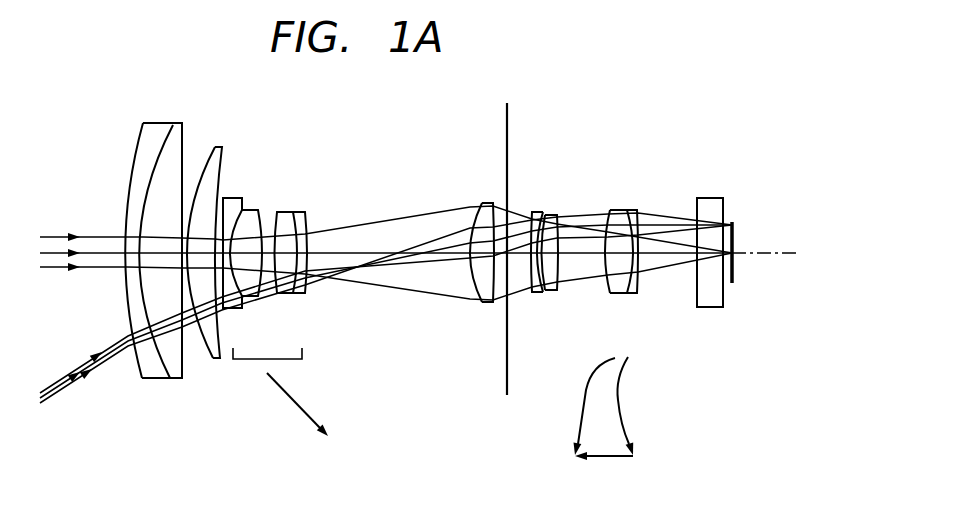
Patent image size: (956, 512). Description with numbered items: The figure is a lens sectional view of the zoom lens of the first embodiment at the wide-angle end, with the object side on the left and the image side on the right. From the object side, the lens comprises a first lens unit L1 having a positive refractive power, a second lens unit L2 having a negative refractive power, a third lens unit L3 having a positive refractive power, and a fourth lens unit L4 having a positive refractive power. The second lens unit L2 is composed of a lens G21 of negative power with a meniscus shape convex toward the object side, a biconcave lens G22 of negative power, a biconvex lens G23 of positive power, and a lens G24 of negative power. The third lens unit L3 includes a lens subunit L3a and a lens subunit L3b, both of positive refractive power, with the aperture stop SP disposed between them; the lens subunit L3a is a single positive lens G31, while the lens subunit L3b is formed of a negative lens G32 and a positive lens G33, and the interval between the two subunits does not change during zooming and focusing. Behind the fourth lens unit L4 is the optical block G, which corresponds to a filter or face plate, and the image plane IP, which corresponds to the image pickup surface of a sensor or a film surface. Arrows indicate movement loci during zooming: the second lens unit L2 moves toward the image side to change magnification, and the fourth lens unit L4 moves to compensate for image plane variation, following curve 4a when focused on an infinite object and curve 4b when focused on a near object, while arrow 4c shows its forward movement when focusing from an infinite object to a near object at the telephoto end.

The first lens unit L1 is at (179, 230).
The second lens unit L2 is at (215, 265).
The third lens unit L3 is at (527, 241).
The lens subunit L3a is at (482, 261).
The lens subunit L3b is at (568, 255).
The fourth lens unit L4 is at (621, 227).
The lens G21 is at (230, 181).
The biconcave lens G22 is at (250, 208).
The biconvex lens G23 is at (285, 213).
The lens G24 is at (298, 213).
The single lens G31 is at (488, 302).
The lens G32 is at (538, 292).
The lens G33 is at (553, 292).
The aperture stop SP is at (508, 118).
The optical block G is at (714, 198).
The image plane IP is at (737, 233).
The curve 4a is at (618, 395).
The curve 4b is at (587, 393).
The arrow 4c is at (608, 460).